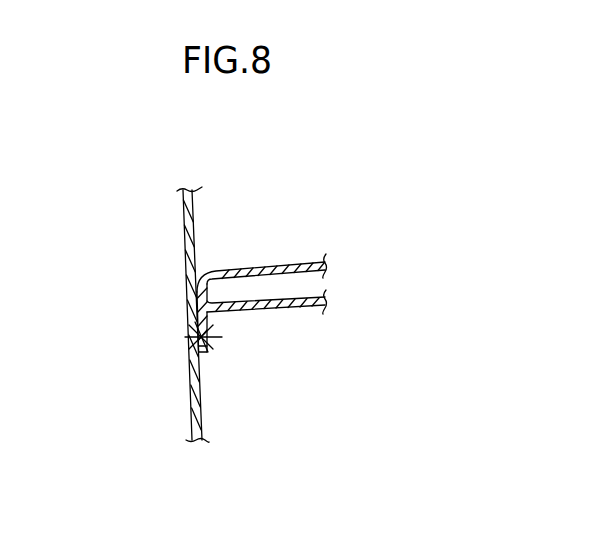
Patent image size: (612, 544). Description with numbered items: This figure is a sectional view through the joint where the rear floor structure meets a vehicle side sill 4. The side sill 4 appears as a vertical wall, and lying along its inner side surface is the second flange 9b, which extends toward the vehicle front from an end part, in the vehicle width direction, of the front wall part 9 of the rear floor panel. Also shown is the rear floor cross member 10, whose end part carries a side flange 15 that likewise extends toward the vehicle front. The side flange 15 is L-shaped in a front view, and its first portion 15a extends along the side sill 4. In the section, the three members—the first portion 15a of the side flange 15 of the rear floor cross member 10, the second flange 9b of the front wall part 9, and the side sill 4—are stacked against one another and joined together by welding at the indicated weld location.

The side sill 4 is at (186, 248).
The front wall part 9 is at (283, 262).
The second flange 9b is at (190, 299).
The rear floor cross member 10 is at (298, 307).
The side flange 15 is at (214, 321).
The first portion 15a is at (218, 352).